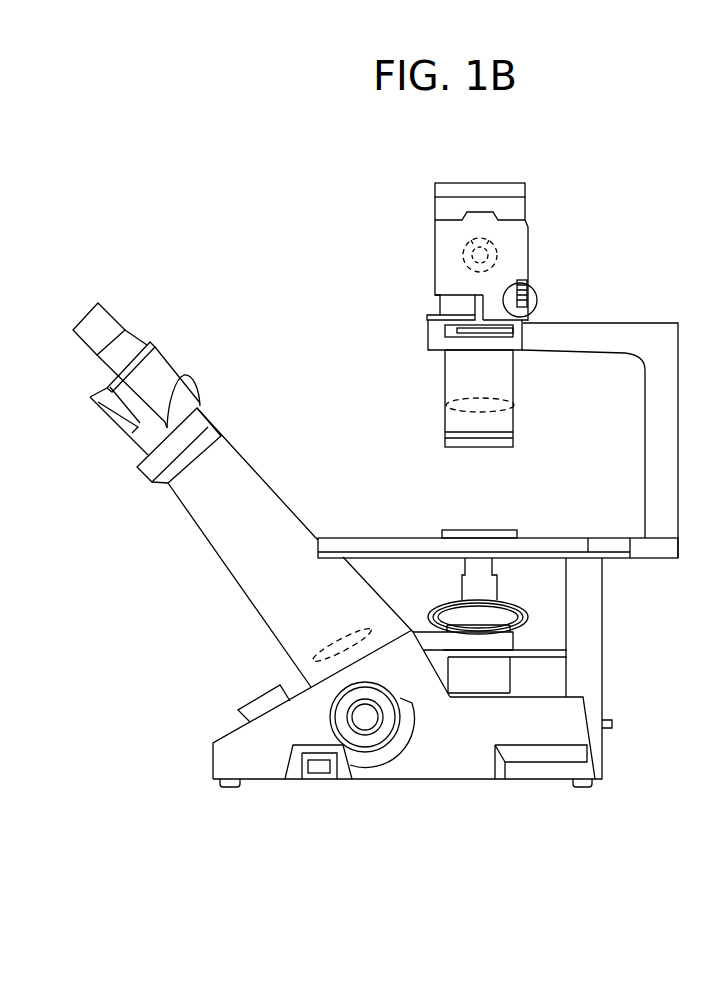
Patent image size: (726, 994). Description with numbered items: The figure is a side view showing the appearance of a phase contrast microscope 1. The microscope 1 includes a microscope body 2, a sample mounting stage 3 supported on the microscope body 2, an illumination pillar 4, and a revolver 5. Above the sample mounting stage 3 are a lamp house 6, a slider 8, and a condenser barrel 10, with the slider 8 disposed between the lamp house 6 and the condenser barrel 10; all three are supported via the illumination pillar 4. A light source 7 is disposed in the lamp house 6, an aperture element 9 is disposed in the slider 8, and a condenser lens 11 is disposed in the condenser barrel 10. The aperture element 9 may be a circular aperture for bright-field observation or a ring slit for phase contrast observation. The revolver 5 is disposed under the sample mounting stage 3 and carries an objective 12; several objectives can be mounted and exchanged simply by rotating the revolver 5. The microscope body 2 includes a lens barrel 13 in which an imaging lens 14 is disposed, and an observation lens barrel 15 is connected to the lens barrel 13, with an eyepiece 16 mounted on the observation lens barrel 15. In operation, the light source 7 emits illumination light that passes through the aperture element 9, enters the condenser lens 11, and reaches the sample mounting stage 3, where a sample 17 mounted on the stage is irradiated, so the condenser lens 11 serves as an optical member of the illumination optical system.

The microscope 1 is at (556, 168).
The microscope body 2 is at (563, 713).
The sample mounting stage 3 is at (380, 537).
The illumination pillar 4 is at (660, 480).
The revolver 5 is at (518, 612).
The lamp house 6 is at (510, 247).
The light source 7 is at (462, 247).
The slider 8 is at (508, 313).
The aperture element 9 is at (466, 332).
The condenser barrel 10 is at (500, 384).
The condenser lens 11 is at (450, 396).
The objective 12 is at (483, 590).
The lens barrel 13 is at (245, 563).
The imaging lens 14 is at (315, 662).
The observation lens barrel 15 is at (157, 372).
The eyepiece 16 is at (102, 323).
The sample 17 is at (468, 530).